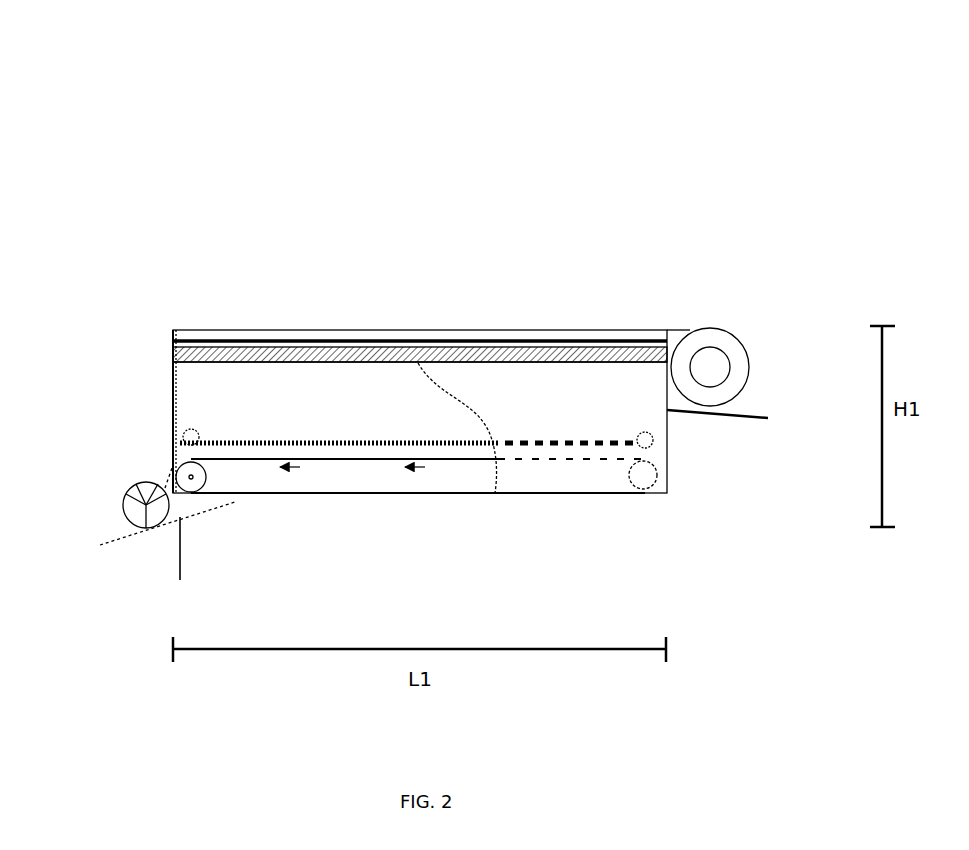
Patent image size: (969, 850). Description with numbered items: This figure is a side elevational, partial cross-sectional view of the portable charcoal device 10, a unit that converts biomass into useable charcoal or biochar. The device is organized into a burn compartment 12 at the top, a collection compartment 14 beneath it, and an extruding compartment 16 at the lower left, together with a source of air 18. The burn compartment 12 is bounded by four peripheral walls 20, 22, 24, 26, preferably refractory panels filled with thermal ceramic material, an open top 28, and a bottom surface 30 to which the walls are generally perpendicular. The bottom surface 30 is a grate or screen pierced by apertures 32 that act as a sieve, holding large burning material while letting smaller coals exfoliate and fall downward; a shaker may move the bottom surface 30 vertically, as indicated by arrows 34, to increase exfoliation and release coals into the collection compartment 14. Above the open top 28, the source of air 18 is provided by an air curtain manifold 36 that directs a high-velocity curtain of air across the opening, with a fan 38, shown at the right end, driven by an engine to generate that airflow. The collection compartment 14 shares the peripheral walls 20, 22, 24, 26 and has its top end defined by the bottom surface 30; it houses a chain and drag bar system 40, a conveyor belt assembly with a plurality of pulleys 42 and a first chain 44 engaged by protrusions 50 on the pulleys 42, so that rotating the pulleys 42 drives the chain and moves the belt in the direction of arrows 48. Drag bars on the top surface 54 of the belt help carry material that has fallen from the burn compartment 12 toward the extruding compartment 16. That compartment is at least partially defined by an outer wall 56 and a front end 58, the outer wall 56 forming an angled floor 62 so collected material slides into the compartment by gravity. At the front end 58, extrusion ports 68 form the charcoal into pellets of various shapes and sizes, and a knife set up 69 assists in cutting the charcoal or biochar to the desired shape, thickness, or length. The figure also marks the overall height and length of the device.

The portable charcoal device 10 is at (684, 74).
The burn compartment 12 is at (195, 391).
The collection compartment 14 is at (180, 456).
The extruding compartment 16 is at (122, 491).
The source of air 18 is at (742, 333).
The peripheral wall 20 is at (171, 411).
The peripheral wall 22 is at (735, 420).
The peripheral wall 24 is at (608, 396).
The peripheral wall 26 is at (310, 390).
The open top 28 is at (590, 320).
The bottom surface 30 is at (457, 440).
The apertures 32 is at (219, 440).
The arrows 34 is at (405, 446).
The air curtain manifold 36 is at (401, 330).
The fan 38 is at (742, 364).
The chain and drag bar system 40 is at (280, 498).
The pulleys 42 is at (198, 482).
The first chain 44 is at (555, 462).
The arrows 48 is at (333, 495).
The protrusions 50 is at (206, 476).
The top surface of the belt 54 is at (315, 456).
The outer wall 56 is at (157, 477).
The front end 58 is at (157, 539).
The floor 62 is at (182, 564).
The extrusion ports 68 is at (127, 495).
The knife set up 69 is at (125, 516).